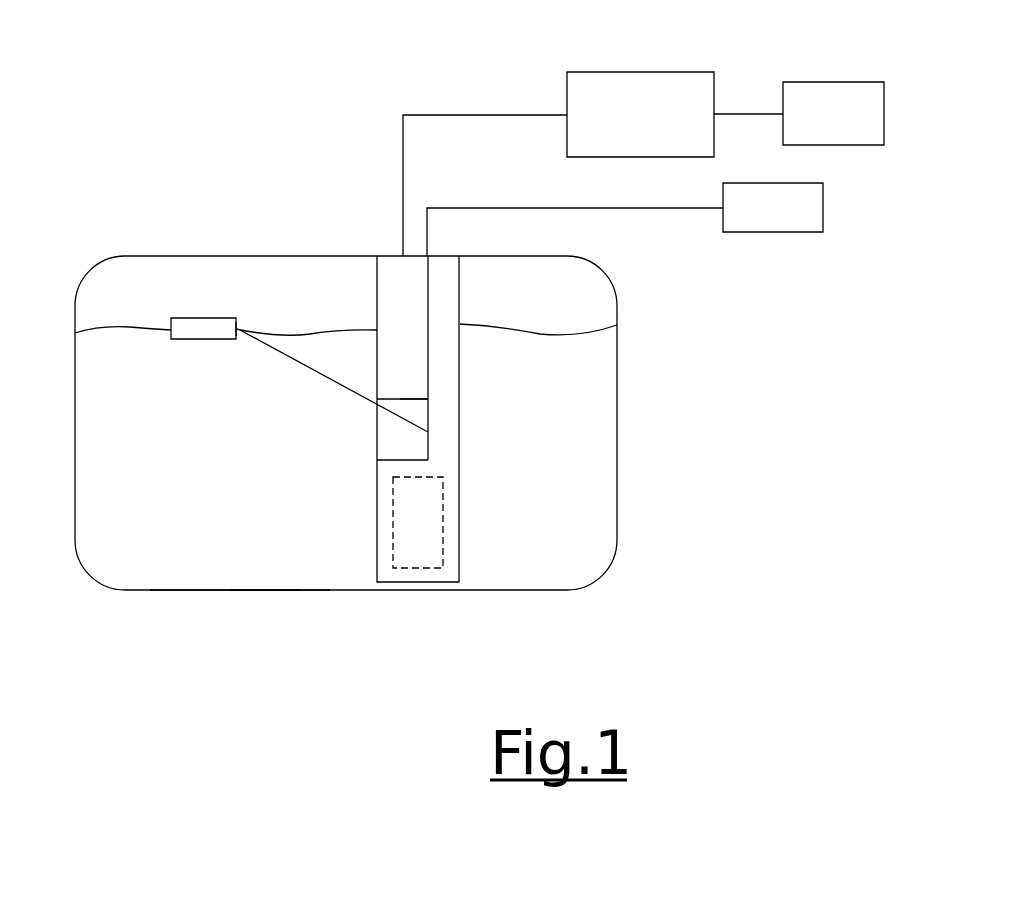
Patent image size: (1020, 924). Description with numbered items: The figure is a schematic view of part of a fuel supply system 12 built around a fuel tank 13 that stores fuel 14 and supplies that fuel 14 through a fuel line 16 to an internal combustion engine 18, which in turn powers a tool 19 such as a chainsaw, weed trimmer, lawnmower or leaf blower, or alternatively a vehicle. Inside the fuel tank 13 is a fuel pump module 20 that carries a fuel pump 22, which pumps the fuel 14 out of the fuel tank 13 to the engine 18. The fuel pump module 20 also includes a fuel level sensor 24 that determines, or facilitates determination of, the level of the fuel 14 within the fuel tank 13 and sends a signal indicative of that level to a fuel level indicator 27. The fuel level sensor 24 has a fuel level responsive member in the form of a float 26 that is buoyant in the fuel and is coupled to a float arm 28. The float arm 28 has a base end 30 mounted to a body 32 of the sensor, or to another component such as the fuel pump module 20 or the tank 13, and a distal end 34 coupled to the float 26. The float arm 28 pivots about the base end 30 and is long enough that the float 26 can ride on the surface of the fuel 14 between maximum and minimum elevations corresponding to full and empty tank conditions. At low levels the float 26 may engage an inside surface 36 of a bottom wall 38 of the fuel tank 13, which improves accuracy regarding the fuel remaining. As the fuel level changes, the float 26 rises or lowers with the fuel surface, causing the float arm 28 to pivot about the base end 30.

The fuel supply system 12 is at (135, 93).
The fuel tank 13 is at (75, 463).
The fuel 14 is at (118, 334).
The fuel line 16 is at (443, 115).
The internal combustion engine 18 is at (648, 72).
The tool 19 is at (835, 82).
The fuel pump module 20 is at (460, 345).
The fuel pump 22 is at (443, 527).
The fuel level sensor 24 is at (366, 405).
The float 26 is at (207, 318).
The fuel level indicator 27 is at (777, 232).
The float arm 28 is at (301, 365).
The base end 30 is at (415, 426).
The body 32 is at (393, 441).
The distal end 34 is at (252, 326).
The inside surface 36 is at (210, 590).
The bottom wall 38 is at (282, 590).